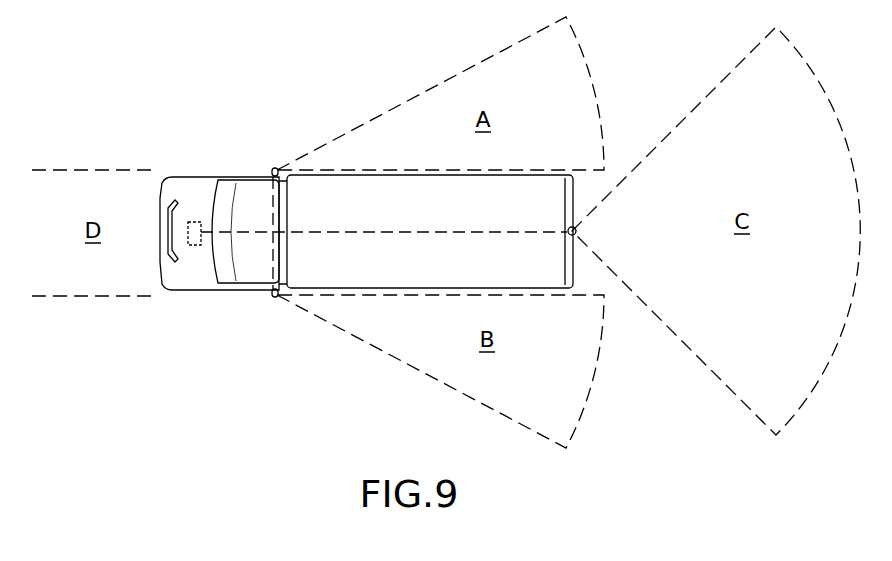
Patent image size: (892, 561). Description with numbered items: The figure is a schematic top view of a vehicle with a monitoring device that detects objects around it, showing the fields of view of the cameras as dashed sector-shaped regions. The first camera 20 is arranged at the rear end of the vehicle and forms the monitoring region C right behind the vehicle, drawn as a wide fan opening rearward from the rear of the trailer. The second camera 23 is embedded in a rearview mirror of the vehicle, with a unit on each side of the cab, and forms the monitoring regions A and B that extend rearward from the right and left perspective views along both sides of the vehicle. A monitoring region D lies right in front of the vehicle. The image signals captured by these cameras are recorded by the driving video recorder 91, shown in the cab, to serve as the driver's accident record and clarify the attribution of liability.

The driving video recorder 91 is at (196, 221).
The second camera 23 is at (275, 169).
The first camera 20 is at (577, 231).